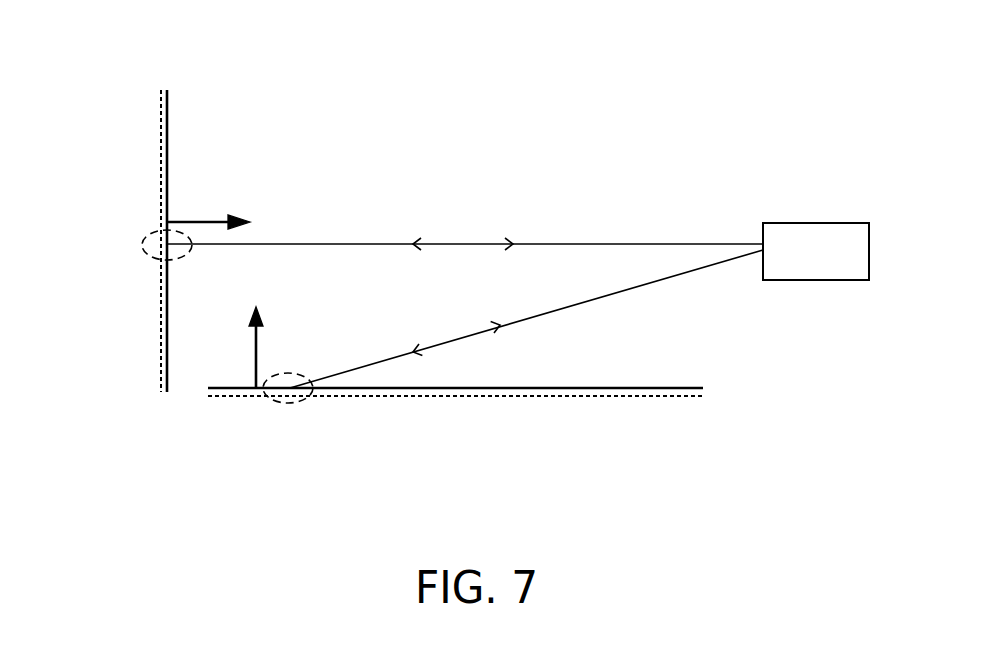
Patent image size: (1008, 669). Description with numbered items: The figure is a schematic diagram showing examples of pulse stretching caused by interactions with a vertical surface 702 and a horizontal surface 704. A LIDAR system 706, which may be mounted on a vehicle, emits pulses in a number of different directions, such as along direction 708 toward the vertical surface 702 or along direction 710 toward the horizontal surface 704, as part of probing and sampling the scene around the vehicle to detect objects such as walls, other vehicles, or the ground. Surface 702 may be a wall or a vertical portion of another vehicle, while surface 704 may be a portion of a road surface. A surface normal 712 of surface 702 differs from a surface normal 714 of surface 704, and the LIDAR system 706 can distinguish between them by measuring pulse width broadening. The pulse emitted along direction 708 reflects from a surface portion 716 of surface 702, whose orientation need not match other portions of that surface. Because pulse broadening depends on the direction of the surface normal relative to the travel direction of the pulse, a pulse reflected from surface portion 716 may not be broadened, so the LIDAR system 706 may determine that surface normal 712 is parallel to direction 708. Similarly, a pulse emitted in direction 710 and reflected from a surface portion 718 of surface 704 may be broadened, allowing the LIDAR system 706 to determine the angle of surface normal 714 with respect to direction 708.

The surface 702 is at (172, 80).
The surface 704 is at (712, 389).
The LIDAR system 706 is at (797, 262).
The direction 708 is at (553, 244).
The direction 710 is at (572, 306).
The surface normal 712 is at (198, 222).
The surface normal 714 is at (256, 357).
The surface portion 716 is at (147, 235).
The surface portion 718 is at (283, 405).